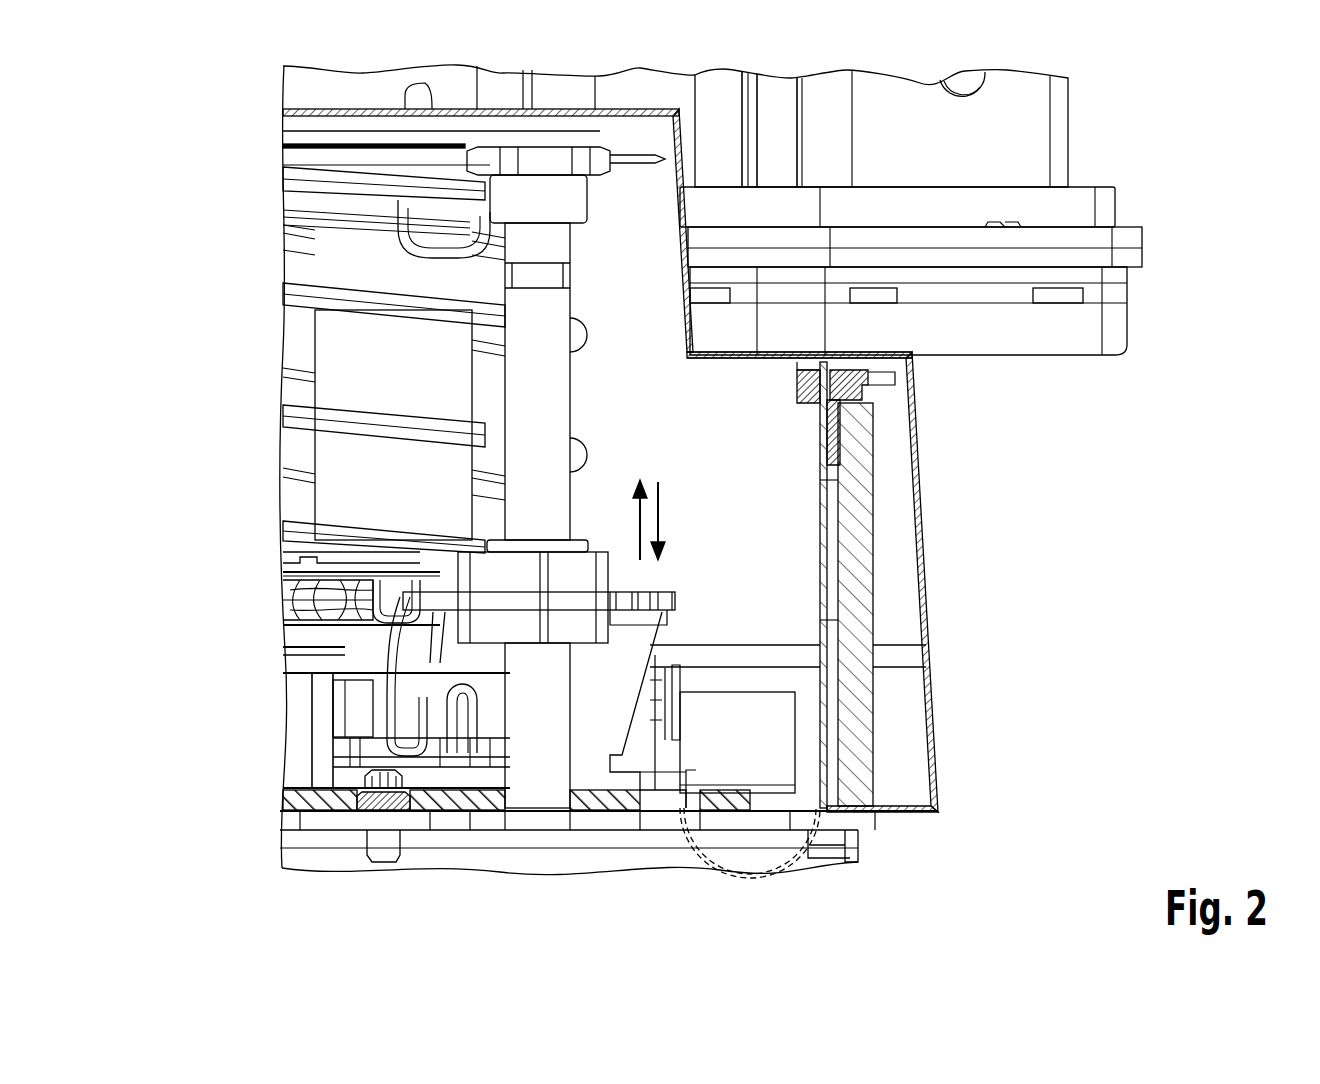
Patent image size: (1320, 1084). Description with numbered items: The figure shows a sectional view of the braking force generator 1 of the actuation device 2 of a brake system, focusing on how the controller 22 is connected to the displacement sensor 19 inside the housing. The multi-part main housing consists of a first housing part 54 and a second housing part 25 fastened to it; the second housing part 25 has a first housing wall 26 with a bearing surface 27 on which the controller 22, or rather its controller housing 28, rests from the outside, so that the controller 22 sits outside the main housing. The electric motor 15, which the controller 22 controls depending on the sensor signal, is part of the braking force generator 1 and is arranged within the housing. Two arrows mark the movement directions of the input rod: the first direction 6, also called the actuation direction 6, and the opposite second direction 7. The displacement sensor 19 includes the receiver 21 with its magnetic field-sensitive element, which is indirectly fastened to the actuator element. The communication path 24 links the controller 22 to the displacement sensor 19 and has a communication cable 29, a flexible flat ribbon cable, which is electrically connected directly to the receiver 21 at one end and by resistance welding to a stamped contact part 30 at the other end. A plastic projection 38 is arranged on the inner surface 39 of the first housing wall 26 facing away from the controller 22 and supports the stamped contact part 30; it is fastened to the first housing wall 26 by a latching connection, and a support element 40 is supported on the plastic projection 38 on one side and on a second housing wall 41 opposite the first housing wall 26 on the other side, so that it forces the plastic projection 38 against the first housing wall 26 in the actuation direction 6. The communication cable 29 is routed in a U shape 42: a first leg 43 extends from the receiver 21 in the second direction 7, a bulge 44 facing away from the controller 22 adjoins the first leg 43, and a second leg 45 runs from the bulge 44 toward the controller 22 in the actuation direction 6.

The braking force generator 1 is at (215, 378).
The actuation device 2 is at (265, 343).
The first direction 6 is at (632, 522).
The second direction 7 is at (665, 522).
The electric motor 15 is at (775, 592).
The displacement sensor 19 is at (700, 720).
The receiver 21 is at (678, 702).
The controller 22 is at (1088, 322).
The communication path 24 is at (800, 506).
The second housing part 25 is at (308, 112).
The first housing wall 26 is at (702, 360).
The bearing surface 27 is at (833, 342).
The controller housing 28 is at (1085, 340).
The communication cable 29 is at (818, 552).
The stamped contact part 30 is at (824, 432).
The plastic projection 38 is at (862, 398).
The inner surface 39 is at (770, 362).
The support element 40 is at (858, 491).
The second housing wall 41 is at (890, 813).
The U shape 42 is at (680, 858).
The first leg 43 is at (688, 792).
The bulge 44 is at (712, 870).
The second leg 45 is at (818, 622).
The first housing part 54 is at (418, 820).